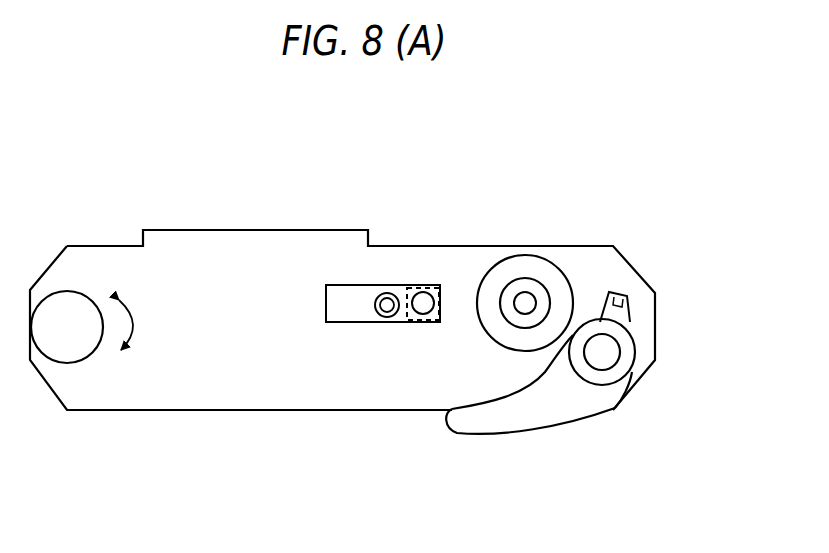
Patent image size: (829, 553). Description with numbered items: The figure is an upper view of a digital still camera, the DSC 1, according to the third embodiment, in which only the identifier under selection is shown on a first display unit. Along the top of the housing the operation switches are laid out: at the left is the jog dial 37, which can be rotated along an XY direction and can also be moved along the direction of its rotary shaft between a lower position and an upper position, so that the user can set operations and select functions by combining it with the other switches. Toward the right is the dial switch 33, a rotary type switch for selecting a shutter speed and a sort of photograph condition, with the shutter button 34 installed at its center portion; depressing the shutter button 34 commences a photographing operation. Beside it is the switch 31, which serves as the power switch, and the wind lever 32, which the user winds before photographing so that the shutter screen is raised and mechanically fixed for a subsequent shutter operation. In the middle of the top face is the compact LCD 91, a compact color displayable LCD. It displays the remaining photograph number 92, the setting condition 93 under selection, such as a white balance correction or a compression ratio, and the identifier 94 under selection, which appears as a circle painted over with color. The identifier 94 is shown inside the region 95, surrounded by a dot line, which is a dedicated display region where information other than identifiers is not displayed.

The DSC 1 is at (110, 227).
The switch 31 is at (621, 295).
The wind lever 32 is at (543, 418).
The dial switch 33 is at (512, 255).
The shutter button 34 is at (529, 296).
The jog dial 37 is at (60, 292).
The compact LCD 91 is at (326, 300).
The remaining photograph number 92 is at (343, 292).
The setting condition 93 is at (385, 322).
The identifier 94 is at (421, 291).
The region 95 is at (431, 322).